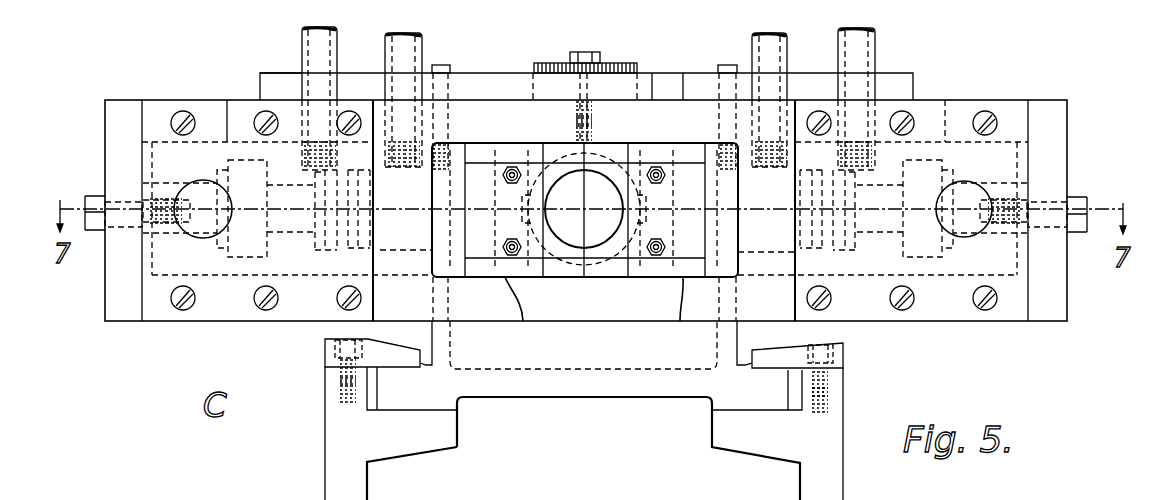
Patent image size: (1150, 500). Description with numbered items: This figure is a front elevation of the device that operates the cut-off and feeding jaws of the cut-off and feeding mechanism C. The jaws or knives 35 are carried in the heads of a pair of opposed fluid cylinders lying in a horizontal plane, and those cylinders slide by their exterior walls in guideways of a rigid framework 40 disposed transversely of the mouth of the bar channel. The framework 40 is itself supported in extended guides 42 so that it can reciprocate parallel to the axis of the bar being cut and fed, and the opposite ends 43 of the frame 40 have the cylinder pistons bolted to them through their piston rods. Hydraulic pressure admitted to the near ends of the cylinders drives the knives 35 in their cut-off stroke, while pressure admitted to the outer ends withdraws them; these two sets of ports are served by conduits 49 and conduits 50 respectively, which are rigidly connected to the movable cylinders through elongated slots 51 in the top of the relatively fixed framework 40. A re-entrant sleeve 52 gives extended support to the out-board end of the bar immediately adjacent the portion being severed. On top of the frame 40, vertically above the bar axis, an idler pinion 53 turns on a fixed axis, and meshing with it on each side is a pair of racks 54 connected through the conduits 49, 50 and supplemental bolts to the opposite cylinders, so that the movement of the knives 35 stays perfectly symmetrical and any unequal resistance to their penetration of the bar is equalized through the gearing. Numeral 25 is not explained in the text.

The standard 25 is at (680, 321).
The jaws 35 is at (523, 321).
The framework 40 is at (620, 393).
The extended guides 42 is at (325, 355).
The opposite ends of the frame 43 is at (115, 292).
The conduits 49 is at (410, 53).
The conduits 50 is at (333, 46).
The elongated slots 51 is at (282, 88).
The re-entrant sleeve 52 is at (612, 188).
The idler pinion 53 is at (620, 63).
The racks 54 is at (898, 95).